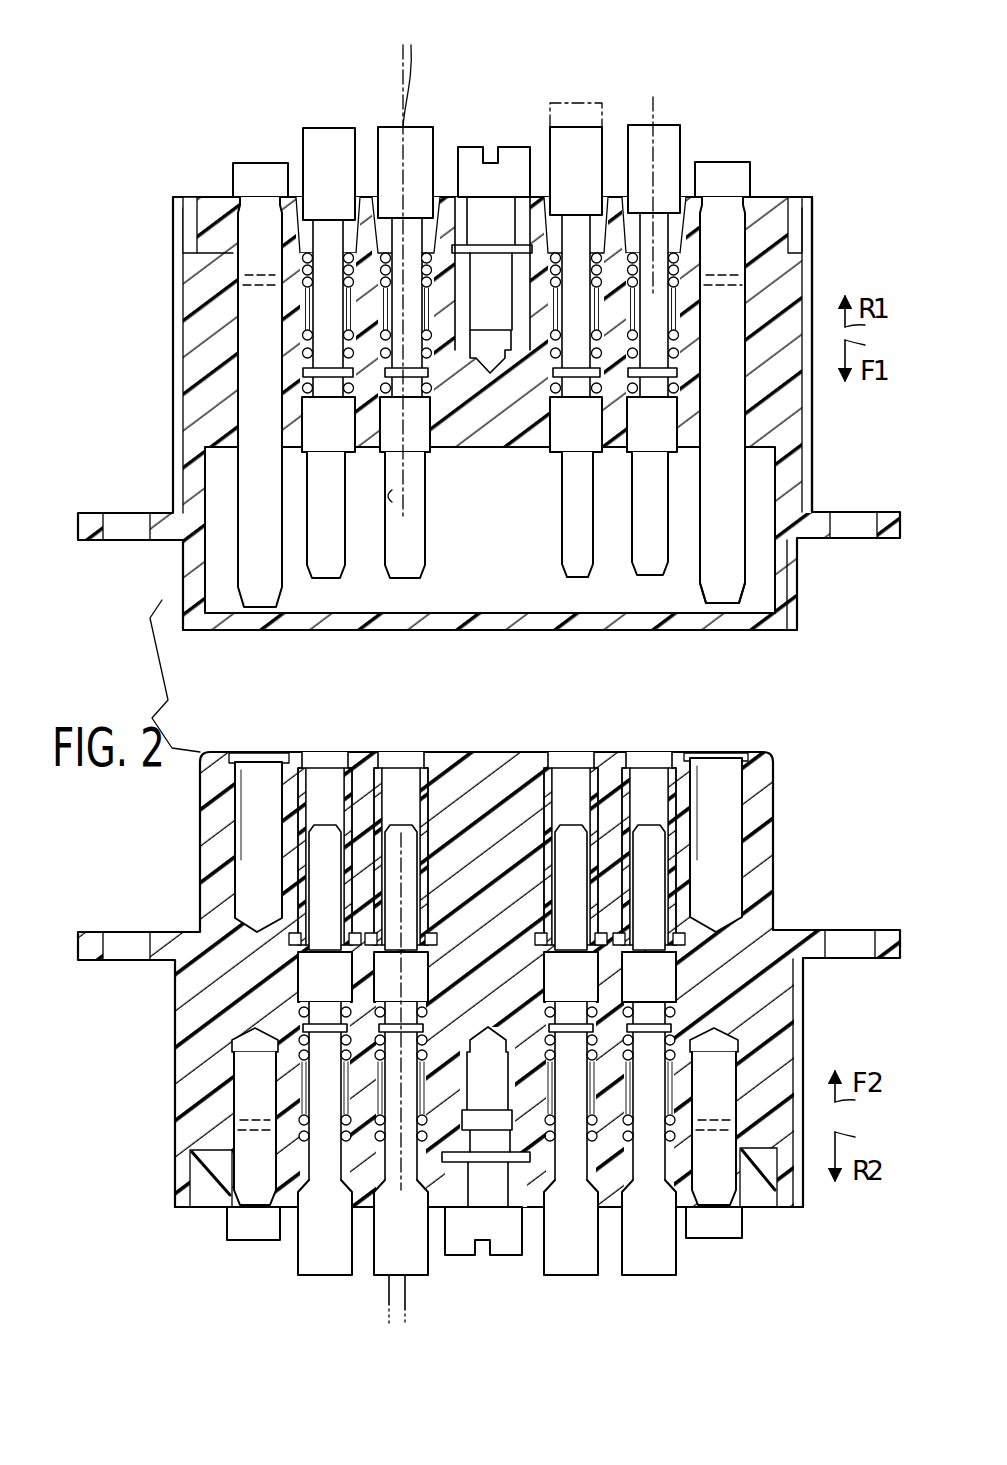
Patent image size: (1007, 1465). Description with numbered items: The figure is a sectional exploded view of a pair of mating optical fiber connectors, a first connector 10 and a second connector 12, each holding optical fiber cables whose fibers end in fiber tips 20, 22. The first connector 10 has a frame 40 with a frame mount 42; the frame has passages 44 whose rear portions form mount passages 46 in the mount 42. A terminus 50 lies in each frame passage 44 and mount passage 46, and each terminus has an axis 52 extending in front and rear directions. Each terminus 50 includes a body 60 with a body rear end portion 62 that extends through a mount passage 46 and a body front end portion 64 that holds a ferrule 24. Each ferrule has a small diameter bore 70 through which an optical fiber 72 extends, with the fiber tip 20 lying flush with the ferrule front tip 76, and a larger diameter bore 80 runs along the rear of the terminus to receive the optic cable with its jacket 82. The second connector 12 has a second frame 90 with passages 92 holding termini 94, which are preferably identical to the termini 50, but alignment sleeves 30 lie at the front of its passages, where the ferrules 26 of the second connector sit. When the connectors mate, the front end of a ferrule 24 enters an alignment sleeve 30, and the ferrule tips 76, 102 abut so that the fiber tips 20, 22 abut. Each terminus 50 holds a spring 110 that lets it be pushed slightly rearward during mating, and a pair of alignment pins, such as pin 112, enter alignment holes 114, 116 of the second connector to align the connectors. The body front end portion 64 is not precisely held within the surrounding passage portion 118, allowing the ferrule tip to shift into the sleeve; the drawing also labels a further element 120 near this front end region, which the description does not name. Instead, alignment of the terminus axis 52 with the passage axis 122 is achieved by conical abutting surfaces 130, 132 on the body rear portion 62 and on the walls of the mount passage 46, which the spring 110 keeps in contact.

The first optical fiber connector 10 is at (618, 72).
The second optical fiber connector 12 is at (766, 1243).
The fiber tip 20 is at (402, 576).
The fiber tip 22 is at (400, 840).
The ferrule 24 is at (593, 557).
The ferrule 26 is at (657, 850).
The alignment sleeve 30 is at (677, 795).
The frame 40 is at (168, 396).
The frame mount 42 is at (193, 221).
The frame passage 44 is at (318, 427).
The mount passage 46 is at (330, 240).
The terminus 50 is at (684, 143).
The terminus axis 52 is at (657, 100).
The body 60 is at (682, 153).
The body rear end portion 62 is at (684, 128).
The body front end portion 64 is at (663, 417).
The small diameter bore 70 is at (395, 495).
The optical fiber 72 is at (407, 527).
The ferrule front tip 76 is at (565, 578).
The larger diameter bore 80 is at (411, 148).
The cable jacket 82 is at (393, 80).
The second frame 90 is at (758, 838).
The passage 92 is at (645, 975).
The terminus 94 is at (712, 1032).
The ferrule tip 102 is at (652, 822).
The spring 110 is at (680, 283).
The alignment pin 112 is at (730, 552).
The alignment hole 114 is at (255, 825).
The alignment hole 116 is at (737, 790).
The passage portion 118 is at (680, 387).
The probe shaft 120 is at (655, 447).
The passage axis 122 is at (653, 200).
The conical abutting surface 130 is at (350, 222).
The conical abutting surface 132 is at (335, 245).